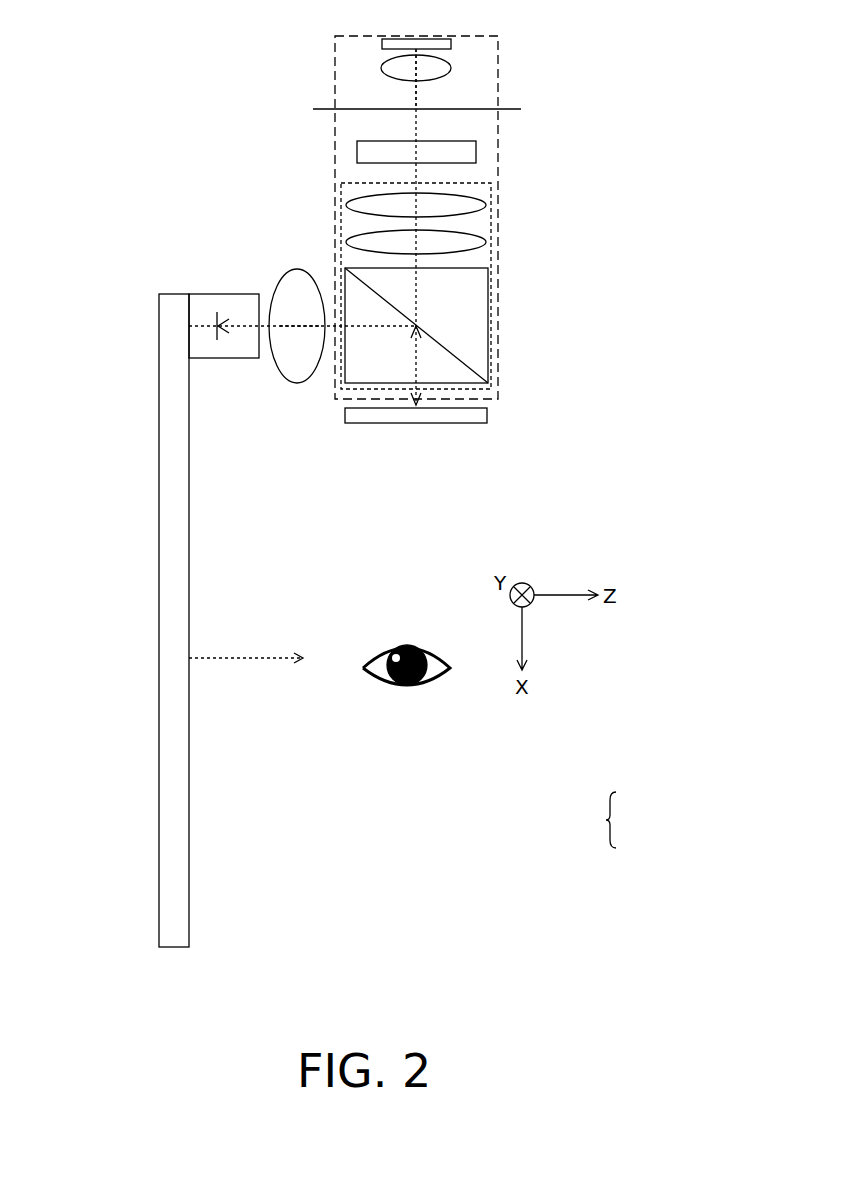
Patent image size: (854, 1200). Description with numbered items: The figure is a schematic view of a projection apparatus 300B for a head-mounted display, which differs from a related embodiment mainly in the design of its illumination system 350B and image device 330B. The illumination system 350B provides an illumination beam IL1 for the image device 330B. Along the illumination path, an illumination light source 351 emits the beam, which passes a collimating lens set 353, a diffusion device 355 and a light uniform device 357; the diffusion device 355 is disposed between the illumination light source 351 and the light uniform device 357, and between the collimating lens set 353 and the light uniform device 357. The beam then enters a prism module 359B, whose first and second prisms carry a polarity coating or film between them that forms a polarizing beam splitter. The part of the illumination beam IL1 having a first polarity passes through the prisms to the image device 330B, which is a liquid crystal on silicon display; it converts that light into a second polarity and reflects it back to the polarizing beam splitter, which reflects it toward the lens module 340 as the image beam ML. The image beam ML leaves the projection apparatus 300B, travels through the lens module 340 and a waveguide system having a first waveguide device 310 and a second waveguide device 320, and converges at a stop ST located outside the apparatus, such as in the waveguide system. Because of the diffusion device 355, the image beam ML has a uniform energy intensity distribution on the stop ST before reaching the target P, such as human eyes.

The projection apparatus 300B is at (614, 823).
The first waveguide device 310 is at (226, 294).
The second waveguide device 320 is at (159, 443).
The image device 330B is at (488, 413).
The lens module 340 is at (295, 384).
The illumination system 350B is at (484, 36).
The illumination light source 351 is at (380, 48).
The collimating lens set 353 is at (382, 70).
The diffusion device 355 is at (512, 109).
The light uniform device 357 is at (476, 150).
The prism module 359B is at (341, 183).
The stop ST is at (213, 326).
The image beam ML is at (304, 326).
The illumination beam IL1 is at (416, 88).
The target P is at (373, 680).